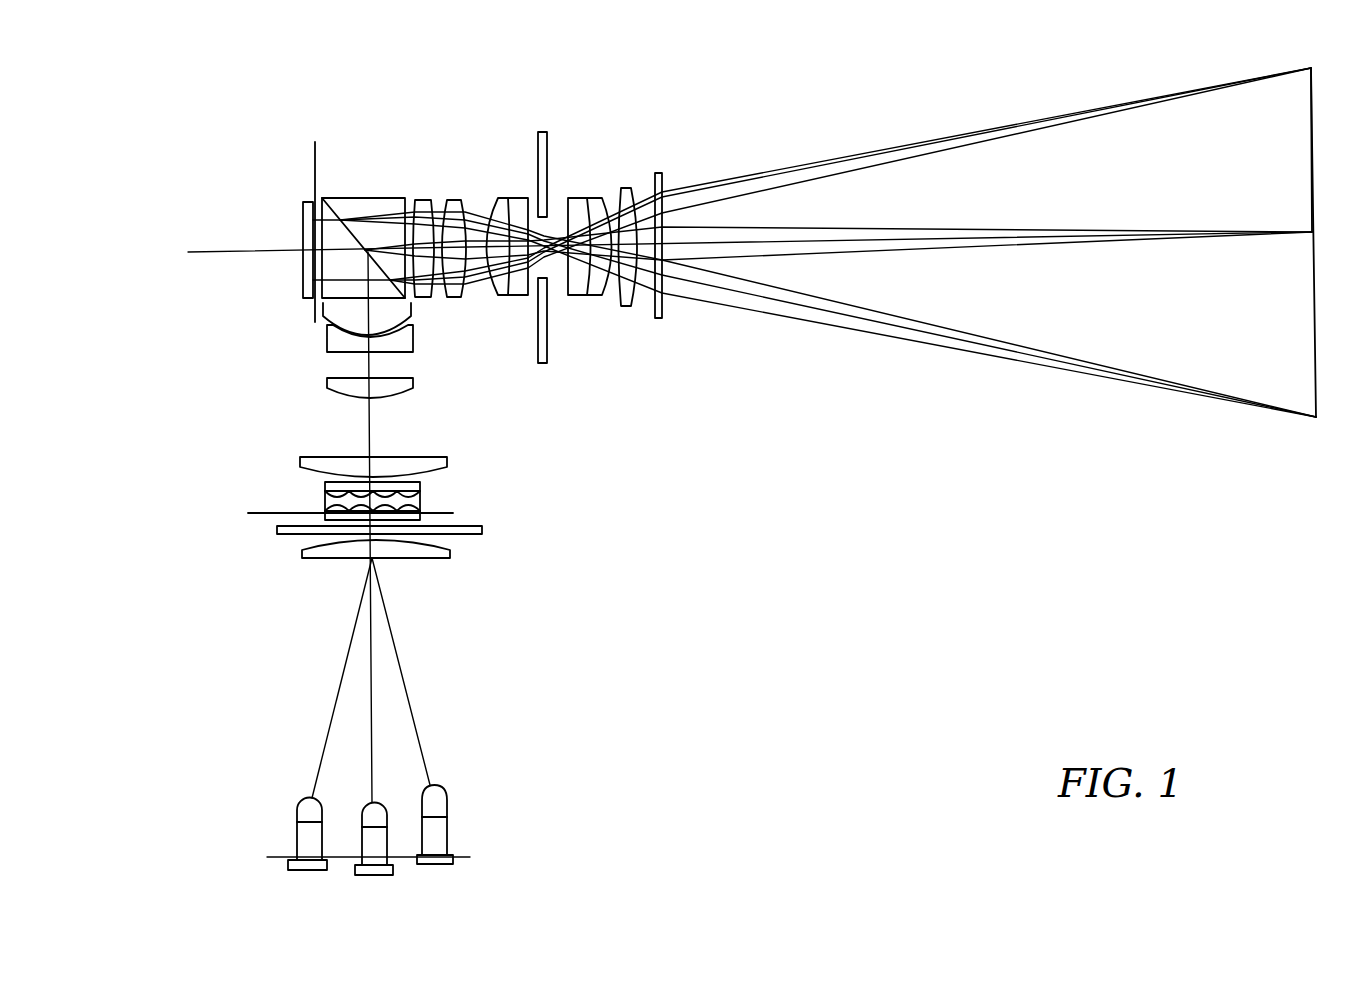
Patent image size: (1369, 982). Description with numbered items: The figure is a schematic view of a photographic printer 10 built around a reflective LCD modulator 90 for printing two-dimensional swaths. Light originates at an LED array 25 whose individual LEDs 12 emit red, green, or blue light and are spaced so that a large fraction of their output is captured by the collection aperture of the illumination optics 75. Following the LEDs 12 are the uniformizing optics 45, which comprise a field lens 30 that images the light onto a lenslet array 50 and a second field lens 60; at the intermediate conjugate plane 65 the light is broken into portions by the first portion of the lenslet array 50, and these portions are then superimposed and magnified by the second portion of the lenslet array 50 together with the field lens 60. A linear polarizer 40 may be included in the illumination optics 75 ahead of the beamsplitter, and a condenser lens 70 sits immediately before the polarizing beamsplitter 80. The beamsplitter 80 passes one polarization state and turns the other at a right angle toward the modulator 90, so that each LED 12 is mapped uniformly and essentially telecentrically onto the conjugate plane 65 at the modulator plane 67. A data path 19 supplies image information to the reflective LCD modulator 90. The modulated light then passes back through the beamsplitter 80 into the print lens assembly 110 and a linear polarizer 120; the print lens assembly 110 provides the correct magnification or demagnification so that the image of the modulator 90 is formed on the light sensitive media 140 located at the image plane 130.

The printer 10 is at (262, 94).
The LEDs 12 is at (445, 790).
The data path 19 is at (260, 272).
The LED array 25 is at (562, 667).
The field lens 30 is at (448, 548).
The linear polarizer 40 is at (400, 397).
The uniformizing optics 45 is at (243, 450).
The lenslet array 50 is at (423, 485).
The field lens 60 is at (334, 457).
The conjugate plane 65 is at (314, 158).
The modulator plane 67 is at (315, 172).
The condenser lens 70 is at (327, 345).
The illumination optics 75 is at (758, 329).
The polarizing beamsplitter 80 is at (378, 198).
The reflective LCD modulator 90 is at (303, 222).
The print lens assembly 110 is at (633, 357).
The linear polarizer 120 is at (663, 177).
The image plane 130 is at (1314, 312).
The light sensitive media 140 is at (1312, 195).